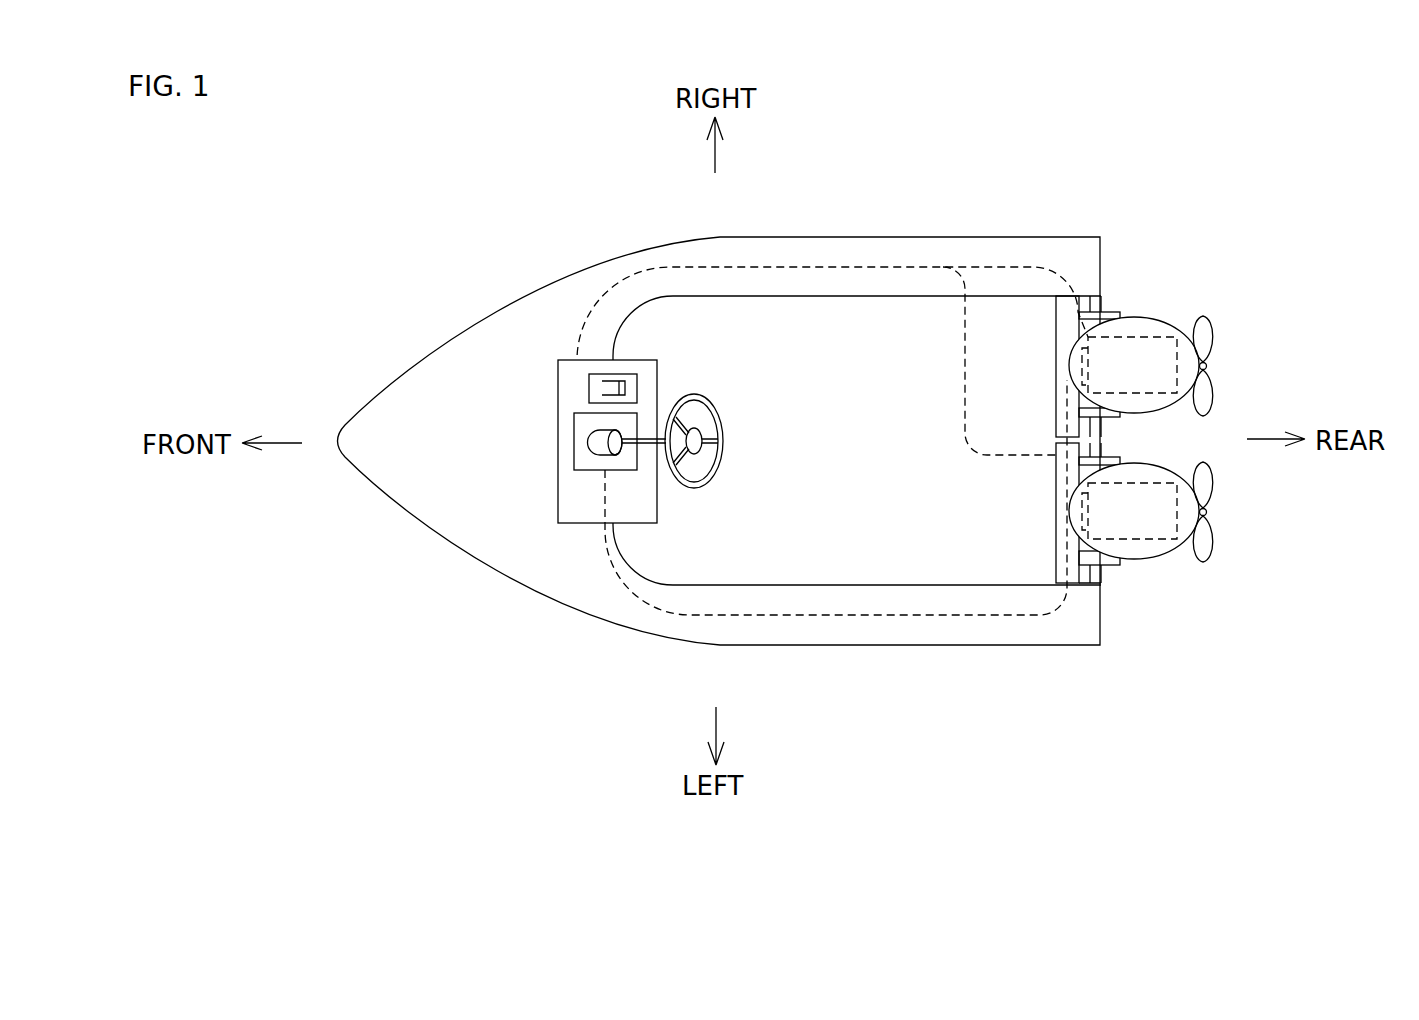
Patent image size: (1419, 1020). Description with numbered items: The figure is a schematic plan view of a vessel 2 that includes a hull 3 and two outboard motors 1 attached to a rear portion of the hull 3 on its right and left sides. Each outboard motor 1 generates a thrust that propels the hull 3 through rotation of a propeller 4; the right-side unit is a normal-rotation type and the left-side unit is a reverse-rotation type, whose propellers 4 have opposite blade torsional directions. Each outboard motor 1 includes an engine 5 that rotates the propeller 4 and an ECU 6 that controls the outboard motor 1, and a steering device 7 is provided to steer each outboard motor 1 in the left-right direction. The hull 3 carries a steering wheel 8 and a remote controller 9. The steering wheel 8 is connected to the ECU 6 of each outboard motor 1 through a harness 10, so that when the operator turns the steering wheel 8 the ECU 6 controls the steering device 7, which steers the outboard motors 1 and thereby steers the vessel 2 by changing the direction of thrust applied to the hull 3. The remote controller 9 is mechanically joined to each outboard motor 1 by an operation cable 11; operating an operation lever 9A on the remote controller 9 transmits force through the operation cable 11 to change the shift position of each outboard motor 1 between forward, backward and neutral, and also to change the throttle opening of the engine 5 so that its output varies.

The outboard motor 1 is at (1140, 312).
The vessel 2 is at (461, 292).
The hull 3 is at (985, 247).
The propeller 4 is at (1213, 337).
The engine 5 is at (1147, 393).
The ECU 6 is at (1082, 367).
The steering device 7 is at (1056, 333).
The steering wheel 8 is at (722, 420).
The remote controller 9 is at (636, 368).
The operation lever 9A is at (636, 387).
The harness 10 is at (892, 617).
The operation cable 11 is at (878, 265).